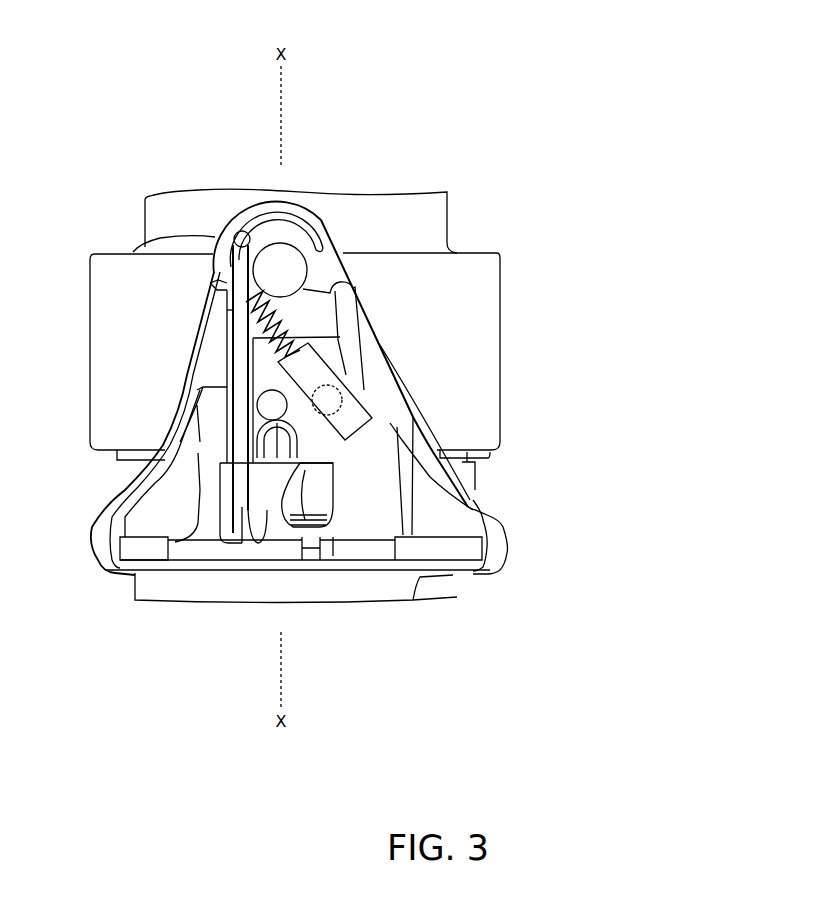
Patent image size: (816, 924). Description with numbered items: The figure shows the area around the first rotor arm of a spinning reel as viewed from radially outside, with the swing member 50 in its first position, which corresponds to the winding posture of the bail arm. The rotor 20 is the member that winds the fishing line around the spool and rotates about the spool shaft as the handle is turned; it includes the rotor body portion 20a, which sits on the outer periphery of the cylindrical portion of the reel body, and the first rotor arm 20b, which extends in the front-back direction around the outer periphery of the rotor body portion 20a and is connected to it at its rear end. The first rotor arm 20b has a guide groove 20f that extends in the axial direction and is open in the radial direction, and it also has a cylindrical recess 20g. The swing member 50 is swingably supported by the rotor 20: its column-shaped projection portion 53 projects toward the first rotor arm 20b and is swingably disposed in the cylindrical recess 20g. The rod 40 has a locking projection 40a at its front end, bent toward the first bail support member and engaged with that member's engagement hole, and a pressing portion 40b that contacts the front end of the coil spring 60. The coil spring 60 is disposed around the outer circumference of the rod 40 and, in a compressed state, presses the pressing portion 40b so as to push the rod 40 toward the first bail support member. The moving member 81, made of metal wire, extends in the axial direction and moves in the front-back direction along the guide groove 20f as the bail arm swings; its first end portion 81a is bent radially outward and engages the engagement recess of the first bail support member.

The rotor 20 is at (376, 225).
The rotor body portion 20a is at (475, 477).
The first rotor arm 20b is at (368, 292).
The guide groove 20f is at (253, 345).
The cylindrical recess 20g is at (392, 412).
The rod 40 is at (227, 328).
The locking projection 40a is at (210, 285).
The pressing portion 40b is at (227, 310).
The swing member 50 is at (227, 368).
The projection portion 53 is at (227, 402).
The coil spring 60 is at (290, 318).
The moving member 81 is at (150, 476).
The first end portion 81a is at (133, 252).